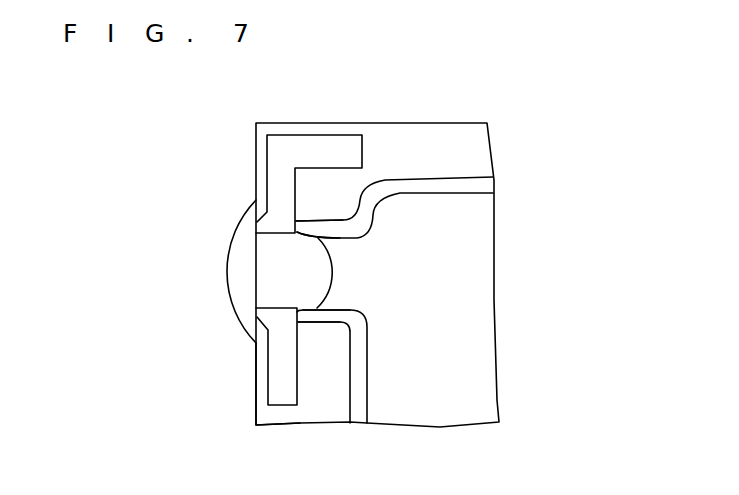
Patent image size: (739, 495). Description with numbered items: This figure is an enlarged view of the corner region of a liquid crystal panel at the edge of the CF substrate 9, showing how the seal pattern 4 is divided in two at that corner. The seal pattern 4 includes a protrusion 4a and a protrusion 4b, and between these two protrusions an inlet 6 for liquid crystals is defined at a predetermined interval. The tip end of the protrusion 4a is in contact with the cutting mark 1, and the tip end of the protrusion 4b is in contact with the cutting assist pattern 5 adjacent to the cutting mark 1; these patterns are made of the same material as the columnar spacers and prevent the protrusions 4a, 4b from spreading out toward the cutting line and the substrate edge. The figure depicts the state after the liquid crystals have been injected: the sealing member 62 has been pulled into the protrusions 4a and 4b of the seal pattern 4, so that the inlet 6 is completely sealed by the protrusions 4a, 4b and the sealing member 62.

The cutting mark 1 is at (318, 148).
The seal pattern 4 is at (485, 185).
The protrusion 4a is at (319, 227).
The protrusion 4b is at (319, 315).
The cutting assist pattern 5 is at (288, 372).
The inlet 6 is at (348, 270).
The sealing member 62 is at (238, 260).
The CF substrate 9 is at (253, 395).